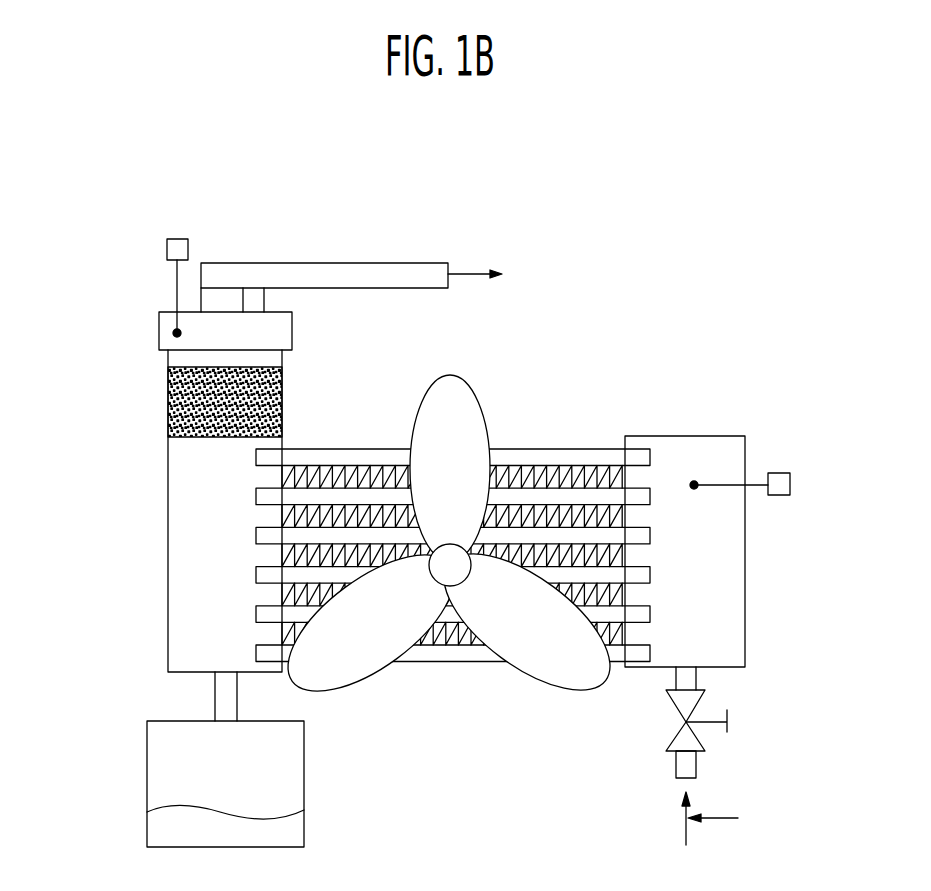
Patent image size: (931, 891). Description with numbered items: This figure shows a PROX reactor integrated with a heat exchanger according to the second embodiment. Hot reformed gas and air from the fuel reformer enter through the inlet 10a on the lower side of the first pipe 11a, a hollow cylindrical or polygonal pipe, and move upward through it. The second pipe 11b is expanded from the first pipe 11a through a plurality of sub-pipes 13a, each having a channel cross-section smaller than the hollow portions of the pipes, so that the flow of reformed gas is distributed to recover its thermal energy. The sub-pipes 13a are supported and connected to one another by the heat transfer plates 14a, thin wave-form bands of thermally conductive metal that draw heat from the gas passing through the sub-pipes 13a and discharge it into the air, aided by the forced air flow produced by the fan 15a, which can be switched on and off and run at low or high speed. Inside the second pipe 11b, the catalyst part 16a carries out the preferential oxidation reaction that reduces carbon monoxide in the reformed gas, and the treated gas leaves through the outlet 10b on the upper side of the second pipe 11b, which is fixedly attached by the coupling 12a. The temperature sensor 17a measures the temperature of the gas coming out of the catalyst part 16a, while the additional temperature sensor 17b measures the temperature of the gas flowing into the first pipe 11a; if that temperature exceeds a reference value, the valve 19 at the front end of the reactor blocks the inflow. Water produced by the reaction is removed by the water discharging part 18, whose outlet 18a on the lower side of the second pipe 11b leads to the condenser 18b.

The inlet 10a is at (690, 768).
The outlet 10b is at (290, 263).
The first pipe 11a is at (698, 436).
The second pipe 11b is at (168, 548).
The coupling 12a is at (159, 320).
The sub-pipes 13a is at (603, 449).
The heat transfer plates 14a is at (526, 472).
The fan 15a is at (470, 382).
The catalyst part 16a is at (168, 397).
The temperature sensor 17a is at (178, 239).
The temperature sensor 17b is at (790, 485).
The water discharging part 18 is at (159, 759).
The outlet 18a is at (215, 695).
The condenser 18b is at (182, 784).
The valve 19 is at (727, 713).